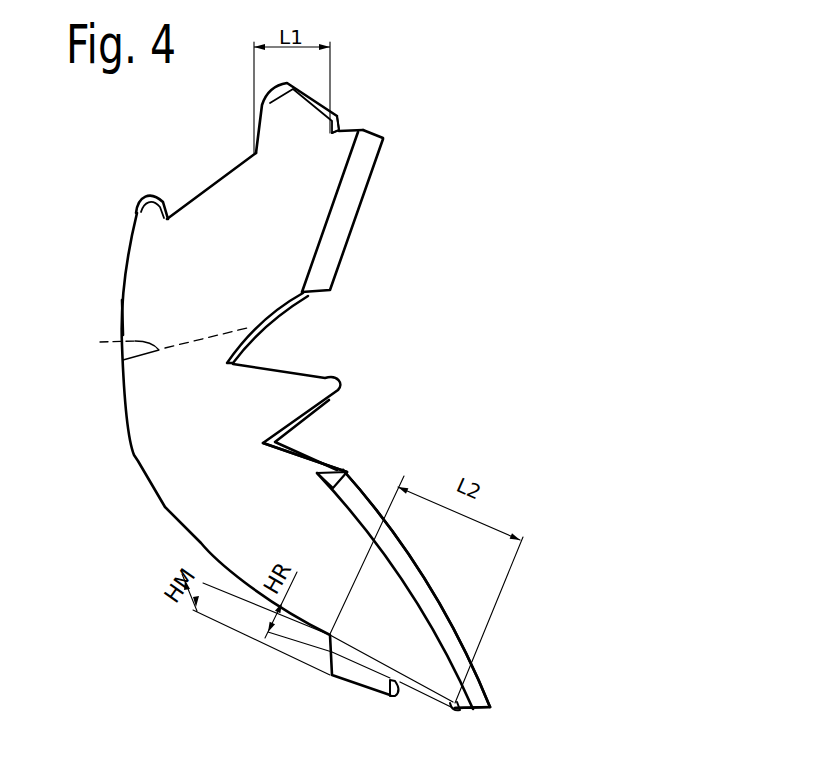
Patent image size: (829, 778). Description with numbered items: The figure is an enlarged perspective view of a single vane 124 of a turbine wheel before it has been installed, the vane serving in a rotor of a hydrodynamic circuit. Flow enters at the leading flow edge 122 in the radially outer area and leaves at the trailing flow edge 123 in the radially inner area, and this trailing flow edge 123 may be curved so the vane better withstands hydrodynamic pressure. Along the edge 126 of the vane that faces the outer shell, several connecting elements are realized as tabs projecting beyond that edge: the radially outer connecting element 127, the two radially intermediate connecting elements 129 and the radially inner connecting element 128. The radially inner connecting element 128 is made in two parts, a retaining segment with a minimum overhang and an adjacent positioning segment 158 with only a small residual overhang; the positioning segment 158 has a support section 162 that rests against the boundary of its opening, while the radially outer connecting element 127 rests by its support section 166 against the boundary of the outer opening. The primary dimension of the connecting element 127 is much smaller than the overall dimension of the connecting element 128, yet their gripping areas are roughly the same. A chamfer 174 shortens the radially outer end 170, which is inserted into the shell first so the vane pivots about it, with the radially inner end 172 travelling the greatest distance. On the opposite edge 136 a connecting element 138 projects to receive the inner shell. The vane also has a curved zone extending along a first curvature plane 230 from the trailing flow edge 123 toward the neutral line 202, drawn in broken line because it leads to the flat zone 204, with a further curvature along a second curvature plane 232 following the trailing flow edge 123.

The leading flow edge 122 is at (367, 190).
The trailing flow edge 123 is at (455, 618).
The vane 124 is at (150, 410).
The edge of the vane 126 is at (123, 316).
The radially outer connecting element 127 is at (268, 123).
The radially inner connecting element 128 is at (412, 693).
The radially intermediate connecting elements 129 is at (140, 233).
The edge of the vane 136 is at (258, 343).
The connecting element 138 is at (322, 386).
The positioning segment 158 is at (433, 705).
The support section 162 is at (453, 708).
The support section 166 is at (340, 120).
The radially outer end 170 is at (360, 135).
The radially inner end 172 is at (455, 706).
The chamfer 174 is at (377, 137).
The neutral line 202 is at (152, 344).
The flat zone 204 is at (212, 194).
The first curvature plane 230 is at (318, 505).
The second curvature plane 232 is at (363, 492).